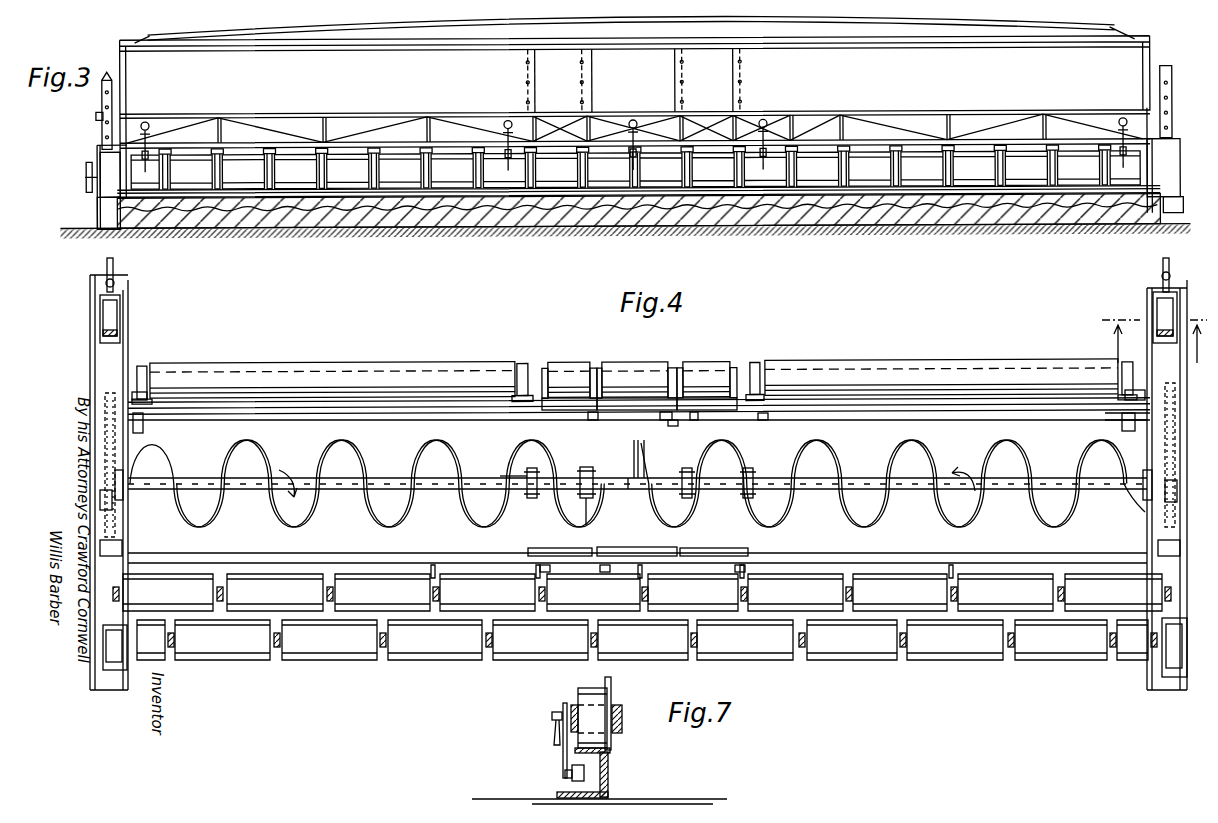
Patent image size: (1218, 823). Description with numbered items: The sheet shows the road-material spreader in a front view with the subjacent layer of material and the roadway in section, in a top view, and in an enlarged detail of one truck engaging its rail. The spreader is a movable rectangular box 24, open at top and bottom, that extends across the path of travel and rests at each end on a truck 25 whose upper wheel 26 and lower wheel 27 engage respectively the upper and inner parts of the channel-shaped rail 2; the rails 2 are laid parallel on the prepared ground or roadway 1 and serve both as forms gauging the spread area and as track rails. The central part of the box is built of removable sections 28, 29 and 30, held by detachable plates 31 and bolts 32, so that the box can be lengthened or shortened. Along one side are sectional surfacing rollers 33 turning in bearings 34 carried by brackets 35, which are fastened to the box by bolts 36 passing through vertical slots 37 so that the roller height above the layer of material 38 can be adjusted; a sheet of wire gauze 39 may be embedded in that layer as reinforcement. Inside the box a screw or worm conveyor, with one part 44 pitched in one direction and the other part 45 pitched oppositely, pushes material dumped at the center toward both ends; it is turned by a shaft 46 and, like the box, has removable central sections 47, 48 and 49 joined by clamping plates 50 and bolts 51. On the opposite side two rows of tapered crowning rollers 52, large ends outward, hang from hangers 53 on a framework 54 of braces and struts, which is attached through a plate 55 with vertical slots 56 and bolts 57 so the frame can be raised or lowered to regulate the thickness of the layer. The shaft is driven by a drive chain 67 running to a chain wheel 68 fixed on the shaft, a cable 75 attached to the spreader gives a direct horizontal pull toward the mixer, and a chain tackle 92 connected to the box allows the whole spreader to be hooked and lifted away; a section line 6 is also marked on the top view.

In FIG. 3, the ground or roadway 1 is at (440, 230).
In FIG. 7, the ground or roadway 1 is at (684, 800).
In FIG. 3, the rails 2 is at (92, 226).
In FIG. 4, the rails 2 is at (114, 284).
In FIG. 7, the rails 2 is at (608, 777).
In FIG. 4, the section line 6 is at (1156, 341).
In FIG. 3, the spreader box 24 is at (1067, 81).
In FIG. 4, the spreader box 24 is at (390, 416).
In FIG. 4, the truck 25 is at (128, 350).
In FIG. 7, the truck 25 is at (565, 704).
In FIG. 4, the upper wheel 26 is at (110, 320).
In FIG. 7, the upper wheel 26 is at (580, 690).
In FIG. 7, the lower wheel 27 is at (570, 782).
In FIG. 3, the removable section 28 is at (551, 80).
In FIG. 4, the removable section 28 is at (563, 418).
In FIG. 3, the removable section 29 is at (617, 80).
In FIG. 4, the removable section 29 is at (642, 420).
In FIG. 3, the removable section 30 is at (704, 80).
In FIG. 4, the removable section 30 is at (705, 420).
In FIG. 3, the plates 31 is at (583, 64).
In FIG. 4, the plates 31 is at (581, 421).
In FIG. 3, the bolts 32 is at (588, 81).
In FIG. 4, the bolts 32 is at (673, 421).
In FIG. 4, the rollers 33 is at (446, 362).
In FIG. 4, the bearings 34 is at (143, 360).
In FIG. 4, the brackets 35 is at (148, 404).
In FIG. 4, the bolts 36 is at (143, 421).
In FIG. 4, the vertical slots 37 is at (780, 415).
In FIG. 3, the layer of material 38 is at (884, 220).
In FIG. 3, the sheet of wire gauze 39 is at (717, 207).
In FIG. 4, the screw conveyor part 44 is at (333, 457).
In FIG. 4, the screw conveyor part 45 is at (925, 457).
In FIG. 3, the shaft 46 is at (96, 125).
In FIG. 4, the shaft 46 is at (396, 478).
In FIG. 4, the removable shaft and worm section 47 is at (634, 418).
In FIG. 4, the removable shaft and worm section 48 is at (628, 490).
In FIG. 4, the removable shaft and worm section 49 is at (711, 482).
In FIG. 4, the clamping plates 50 is at (531, 468).
In FIG. 4, the bolts 51 is at (524, 471).
In FIG. 3, the tapered sectional rollers 52 is at (302, 181).
In FIG. 4, the tapered sectional rollers 52 is at (231, 653).
In FIG. 3, the hangers 53 is at (376, 187).
In FIG. 4, the hangers 53 is at (212, 590).
In FIG. 3, the framework 54 is at (284, 112).
In FIG. 4, the plate 55 is at (420, 553).
In FIG. 3, the vertical slots 56 is at (148, 136).
In FIG. 3, the bolts 57 is at (147, 120).
In FIG. 3, the drive chain 67 is at (108, 70).
In FIG. 4, the drive chain 67 is at (105, 397).
In FIG. 3, the chain wheel 68 is at (100, 138).
In FIG. 4, the chain wheel 68 is at (112, 514).
In FIG. 4, the cable 75 is at (115, 262).
In FIG. 3, the chain tackle 92 is at (662, 19).